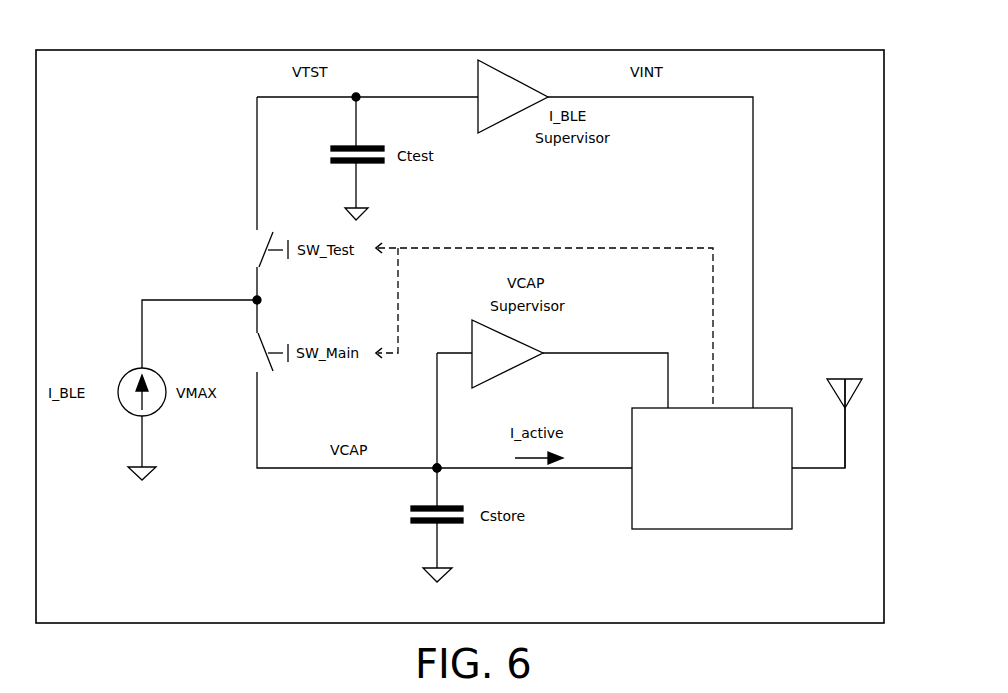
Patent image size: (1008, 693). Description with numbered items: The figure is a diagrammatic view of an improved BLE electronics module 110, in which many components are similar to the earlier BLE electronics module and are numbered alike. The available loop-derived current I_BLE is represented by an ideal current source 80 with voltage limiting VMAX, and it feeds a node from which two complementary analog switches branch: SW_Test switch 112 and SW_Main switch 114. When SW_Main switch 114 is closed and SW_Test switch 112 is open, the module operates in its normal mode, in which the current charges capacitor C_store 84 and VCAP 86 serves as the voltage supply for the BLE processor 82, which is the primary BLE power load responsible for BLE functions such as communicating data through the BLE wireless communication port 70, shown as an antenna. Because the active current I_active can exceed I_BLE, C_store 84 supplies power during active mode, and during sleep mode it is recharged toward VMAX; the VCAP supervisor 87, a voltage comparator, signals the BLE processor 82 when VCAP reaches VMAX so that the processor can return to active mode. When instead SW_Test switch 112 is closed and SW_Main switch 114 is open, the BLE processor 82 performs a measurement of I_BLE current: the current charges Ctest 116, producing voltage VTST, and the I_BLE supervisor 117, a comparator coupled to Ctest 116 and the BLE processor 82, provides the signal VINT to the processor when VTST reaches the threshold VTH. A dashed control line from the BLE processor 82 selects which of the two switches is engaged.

The improved BLE electronics module 110 is at (752, 50).
The SW_Test switch 112 is at (281, 244).
The SW_Main switch 114 is at (268, 357).
The Ctest 116 is at (385, 160).
The I_BLE supervisor 117 is at (514, 120).
The current source 80 is at (158, 410).
The BLE processor 82 is at (712, 468).
The capacitor C_store 84 is at (462, 522).
The VCAP 86 is at (437, 466).
The VCAP supervisor 87 is at (498, 332).
The BLE wireless communication port 70 is at (843, 428).